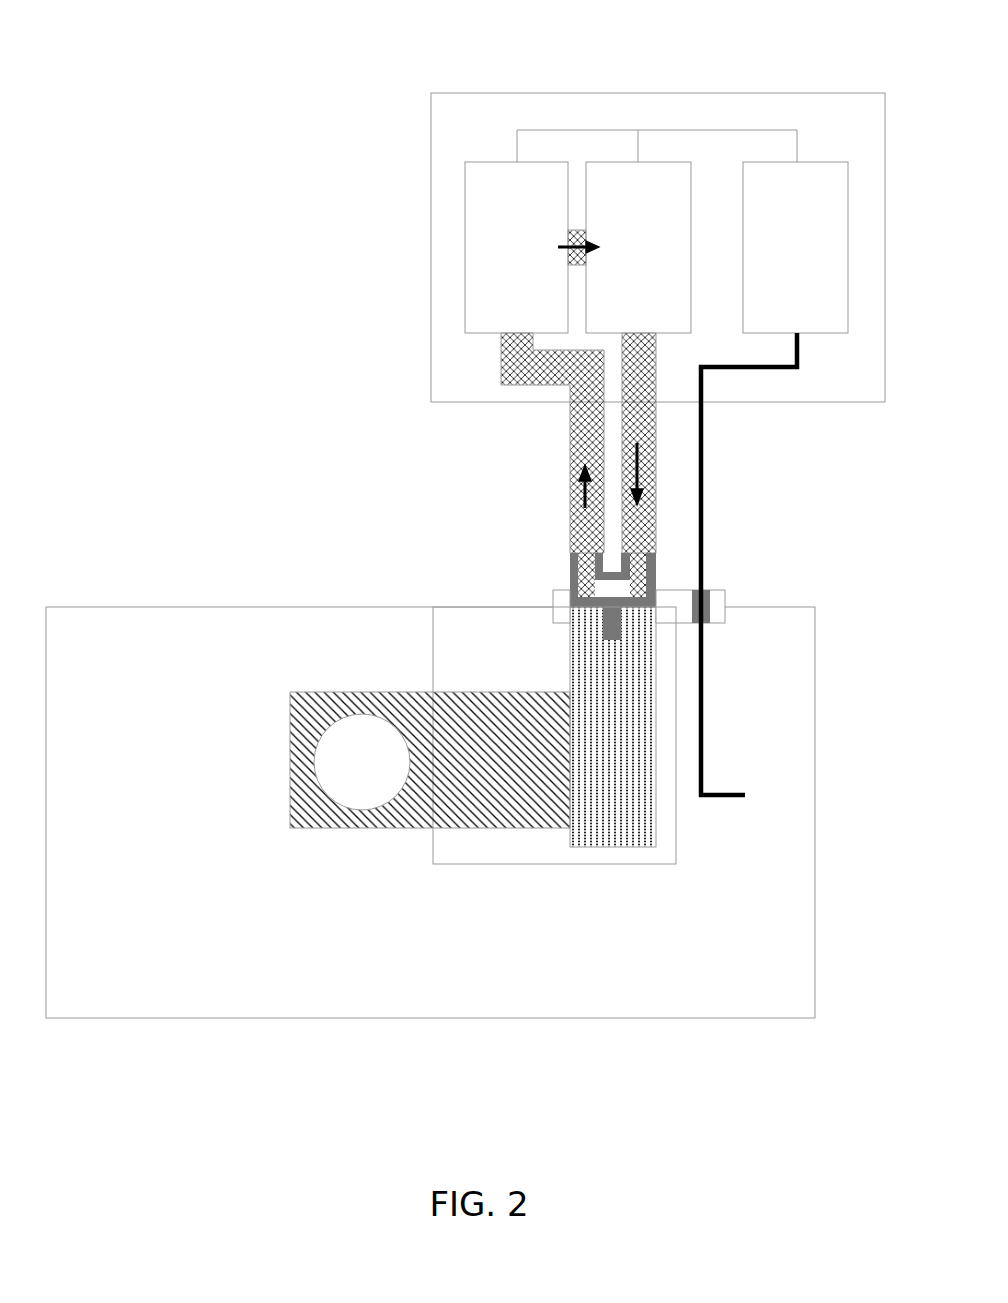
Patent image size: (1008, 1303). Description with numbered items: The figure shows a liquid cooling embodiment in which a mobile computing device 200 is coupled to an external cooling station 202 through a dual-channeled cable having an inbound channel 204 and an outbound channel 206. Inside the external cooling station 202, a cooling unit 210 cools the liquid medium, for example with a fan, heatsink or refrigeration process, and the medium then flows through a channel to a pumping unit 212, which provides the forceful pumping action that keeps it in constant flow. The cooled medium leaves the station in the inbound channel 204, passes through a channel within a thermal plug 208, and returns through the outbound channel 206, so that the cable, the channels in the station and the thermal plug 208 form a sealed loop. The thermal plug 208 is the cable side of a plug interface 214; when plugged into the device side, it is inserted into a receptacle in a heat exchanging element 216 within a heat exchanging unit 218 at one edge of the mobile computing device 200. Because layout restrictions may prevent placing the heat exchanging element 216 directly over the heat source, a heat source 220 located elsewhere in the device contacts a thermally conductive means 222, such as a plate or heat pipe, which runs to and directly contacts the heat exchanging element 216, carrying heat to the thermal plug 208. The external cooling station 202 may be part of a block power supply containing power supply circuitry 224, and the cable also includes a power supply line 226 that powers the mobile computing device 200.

The mobile computing device 200 is at (81, 1018).
The external cooling station 202 is at (603, 92).
The inbound channel 204 is at (656, 544).
The outbound channel 206 is at (570, 488).
The thermal plug 208 is at (638, 623).
The cooling unit 210 is at (502, 280).
The pumping unit 212 is at (623, 280).
The plug interface 214 is at (725, 591).
The heat exchanging element 216 is at (570, 660).
The heat exchanging unit 218 is at (557, 865).
The heat source 220 is at (347, 793).
The thermally conductive means 222 is at (400, 690).
The power supply circuitry 224 is at (781, 280).
The power supply line 226 is at (725, 491).